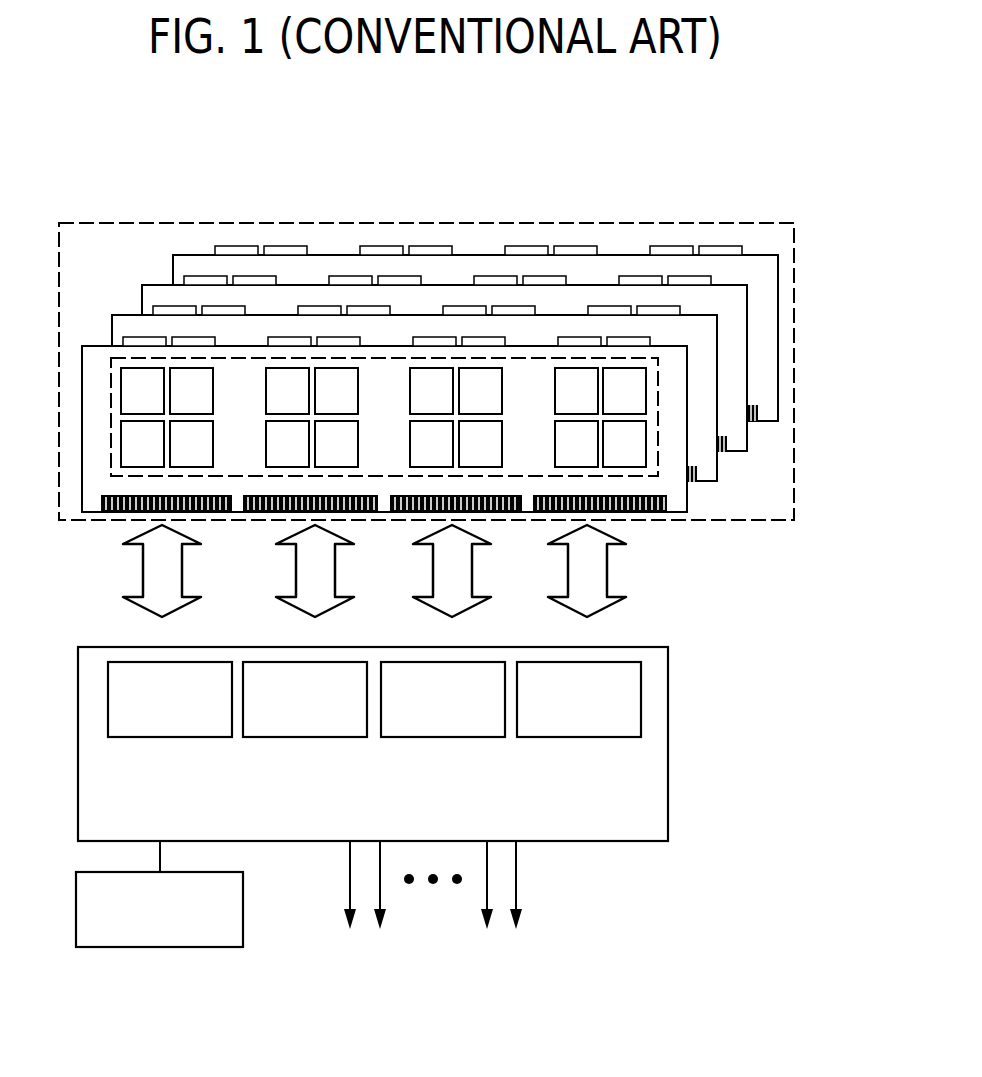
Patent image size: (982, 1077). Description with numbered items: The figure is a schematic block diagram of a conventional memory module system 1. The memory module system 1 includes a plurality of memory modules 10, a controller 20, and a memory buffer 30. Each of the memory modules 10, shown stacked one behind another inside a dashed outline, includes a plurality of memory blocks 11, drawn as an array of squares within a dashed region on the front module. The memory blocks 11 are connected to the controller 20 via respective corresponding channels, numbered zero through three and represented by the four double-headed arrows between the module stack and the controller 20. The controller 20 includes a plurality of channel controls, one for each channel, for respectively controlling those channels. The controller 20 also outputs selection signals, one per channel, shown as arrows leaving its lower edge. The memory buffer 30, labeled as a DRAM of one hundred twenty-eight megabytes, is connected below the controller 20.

The memory module system 1 is at (822, 176).
The memory modules 10 is at (793, 394).
The memory blocks 11 is at (657, 382).
The controller 20 is at (670, 708).
The memory buffer 30 is at (148, 947).